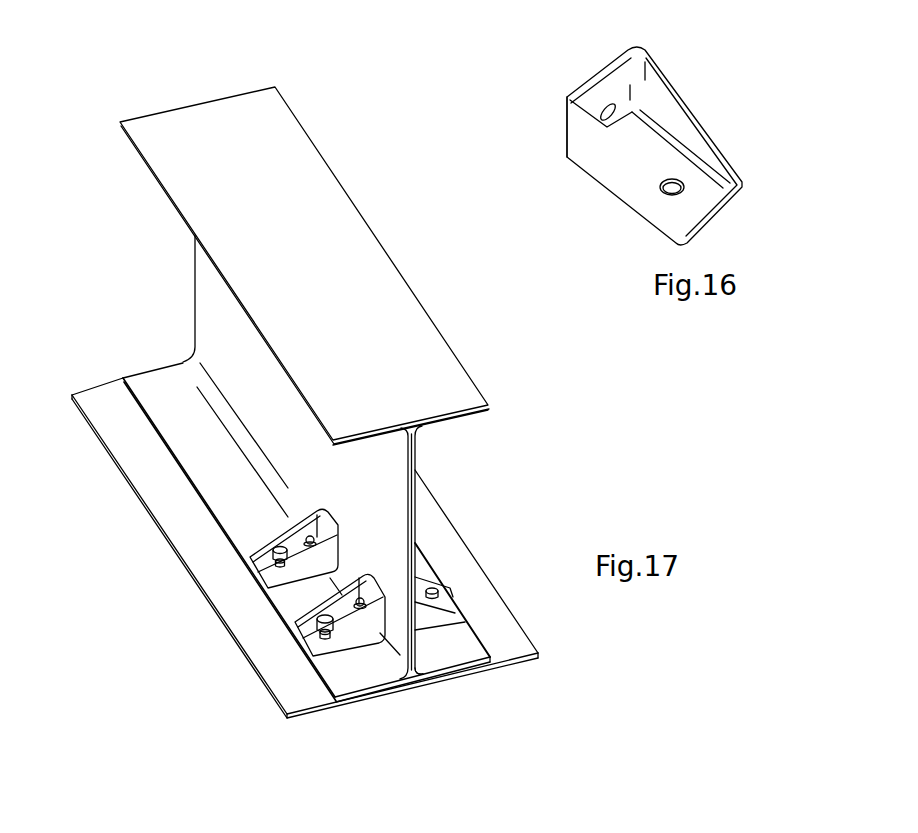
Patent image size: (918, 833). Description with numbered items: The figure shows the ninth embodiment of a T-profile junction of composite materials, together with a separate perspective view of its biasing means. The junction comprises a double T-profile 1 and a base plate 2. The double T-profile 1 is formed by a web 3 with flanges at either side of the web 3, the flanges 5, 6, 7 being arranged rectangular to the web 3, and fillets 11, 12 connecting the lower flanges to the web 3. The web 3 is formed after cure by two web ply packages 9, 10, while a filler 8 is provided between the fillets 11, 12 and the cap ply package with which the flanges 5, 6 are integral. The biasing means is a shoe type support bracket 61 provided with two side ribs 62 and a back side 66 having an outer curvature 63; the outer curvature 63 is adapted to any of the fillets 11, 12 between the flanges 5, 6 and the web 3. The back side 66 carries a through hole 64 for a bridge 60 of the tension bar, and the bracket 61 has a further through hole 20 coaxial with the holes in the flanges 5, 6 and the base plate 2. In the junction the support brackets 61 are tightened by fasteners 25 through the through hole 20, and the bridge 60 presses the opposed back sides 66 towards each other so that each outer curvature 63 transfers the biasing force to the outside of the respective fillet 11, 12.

In FIG. 17, the double T-profile 1 is at (322, 418).
In FIG. 17, the base plate 2 is at (512, 637).
In FIG. 17, the web 3 is at (337, 418).
In FIG. 17, the flange 5 is at (470, 648).
In FIG. 17, the flange 6 is at (343, 678).
In FIG. 17, the flange 7 is at (315, 276).
In FIG. 17, the filler 8 is at (360, 437).
In FIG. 17, the web ply package 9 is at (417, 487).
In FIG. 17, the web ply package 10 is at (405, 452).
In FIG. 17, the fillet 11 is at (423, 662).
In FIG. 17, the fillet 12 is at (395, 663).
In FIG. 17, the fastener 25 is at (438, 583).
In FIG. 17, the bridge 60 is at (350, 578).
In FIG. 16, the shoe type support bracket 61 is at (642, 128).
In FIG. 16, the side rib 62 is at (657, 72).
In FIG. 16, the outer curvature 63 is at (565, 148).
In FIG. 16, the through hole 64 is at (605, 107).
In FIG. 16, the back side 66 is at (610, 63).
In FIG. 16, the through hole 20 is at (672, 185).